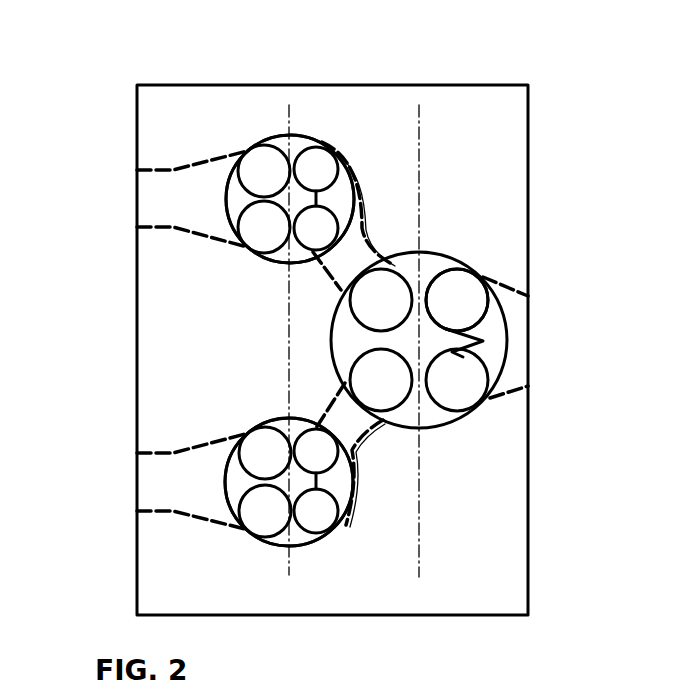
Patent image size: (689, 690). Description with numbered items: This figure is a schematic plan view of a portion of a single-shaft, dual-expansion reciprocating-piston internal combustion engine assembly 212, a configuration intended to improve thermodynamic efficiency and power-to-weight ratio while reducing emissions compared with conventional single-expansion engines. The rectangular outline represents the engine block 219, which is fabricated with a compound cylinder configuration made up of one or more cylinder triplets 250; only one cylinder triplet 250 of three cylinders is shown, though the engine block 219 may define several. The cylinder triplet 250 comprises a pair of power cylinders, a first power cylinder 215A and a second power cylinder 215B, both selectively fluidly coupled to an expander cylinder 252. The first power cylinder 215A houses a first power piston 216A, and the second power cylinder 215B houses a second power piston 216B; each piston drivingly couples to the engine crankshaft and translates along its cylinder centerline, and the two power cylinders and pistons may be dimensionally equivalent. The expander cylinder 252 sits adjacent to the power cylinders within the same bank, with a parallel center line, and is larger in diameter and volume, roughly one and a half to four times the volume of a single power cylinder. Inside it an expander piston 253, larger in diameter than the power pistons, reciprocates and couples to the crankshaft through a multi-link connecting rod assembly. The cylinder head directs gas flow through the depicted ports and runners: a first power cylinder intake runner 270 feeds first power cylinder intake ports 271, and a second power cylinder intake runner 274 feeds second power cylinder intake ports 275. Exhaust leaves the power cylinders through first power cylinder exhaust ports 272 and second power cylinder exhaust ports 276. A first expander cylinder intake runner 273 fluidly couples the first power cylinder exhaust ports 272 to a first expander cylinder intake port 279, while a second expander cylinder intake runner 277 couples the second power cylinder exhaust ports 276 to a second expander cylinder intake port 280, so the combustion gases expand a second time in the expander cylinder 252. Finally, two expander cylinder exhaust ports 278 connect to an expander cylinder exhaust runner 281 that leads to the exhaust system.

The internal combustion engine assembly 212 is at (138, 40).
The engine block 219 is at (228, 85).
The cylinder triplet 250 is at (506, 126).
The expander cylinder 252 is at (437, 254).
The expander piston 253 is at (443, 270).
The first power cylinder intake runner 270 is at (202, 203).
The first power cylinder intake ports 271 is at (245, 152).
The first power cylinder exhaust ports 272 is at (315, 165).
The first expander cylinder intake runner 273 is at (352, 253).
The second power cylinder intake runner 274 is at (202, 480).
The second power cylinder intake ports 275 is at (260, 450).
The second power cylinder exhaust ports 276 is at (312, 442).
The second expander cylinder intake runner 277 is at (350, 430).
The expander cylinder exhaust ports 278 is at (467, 298).
The first expander cylinder intake port 279 is at (385, 292).
The second expander cylinder intake port 280 is at (383, 387).
The expander cylinder exhaust runner 281 is at (517, 340).
The first power cylinder 215A is at (226, 182).
The second power cylinder 215B is at (228, 505).
The first power piston 216A is at (287, 147).
The second power piston 216B is at (285, 540).